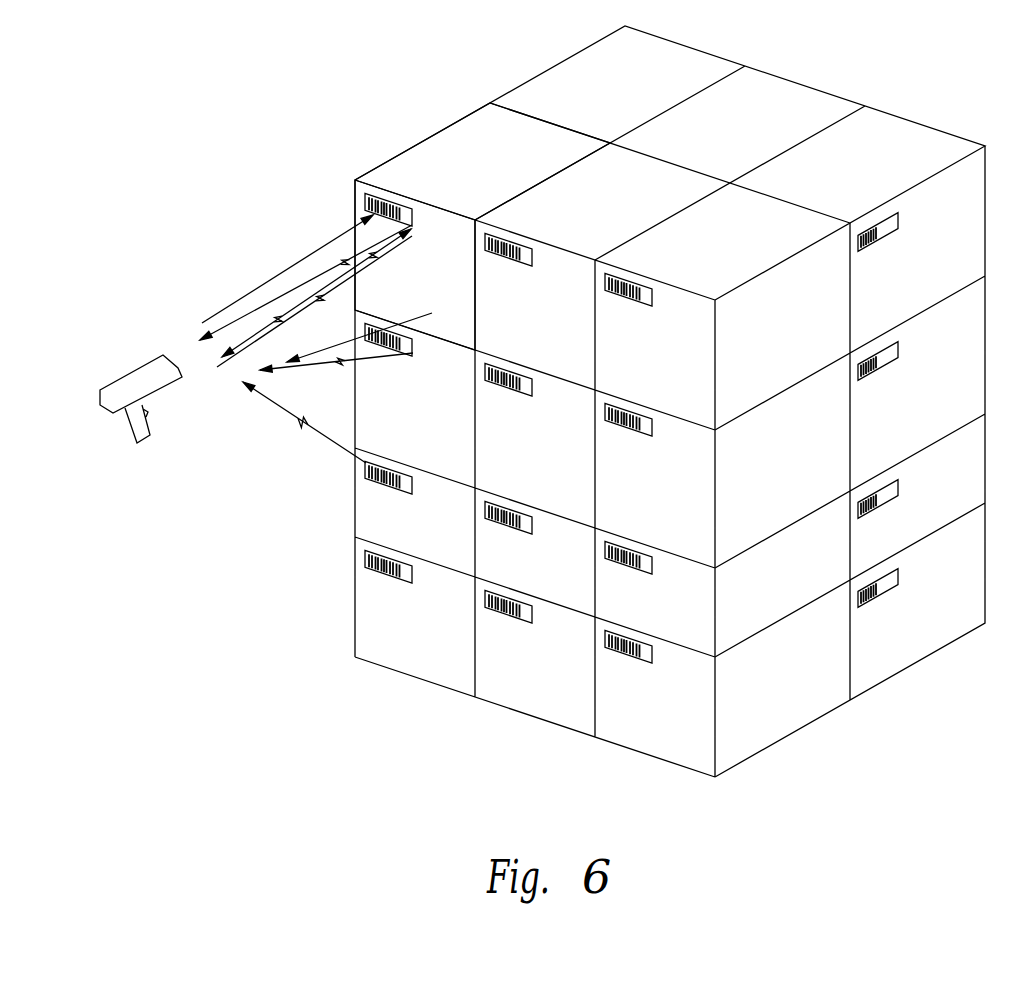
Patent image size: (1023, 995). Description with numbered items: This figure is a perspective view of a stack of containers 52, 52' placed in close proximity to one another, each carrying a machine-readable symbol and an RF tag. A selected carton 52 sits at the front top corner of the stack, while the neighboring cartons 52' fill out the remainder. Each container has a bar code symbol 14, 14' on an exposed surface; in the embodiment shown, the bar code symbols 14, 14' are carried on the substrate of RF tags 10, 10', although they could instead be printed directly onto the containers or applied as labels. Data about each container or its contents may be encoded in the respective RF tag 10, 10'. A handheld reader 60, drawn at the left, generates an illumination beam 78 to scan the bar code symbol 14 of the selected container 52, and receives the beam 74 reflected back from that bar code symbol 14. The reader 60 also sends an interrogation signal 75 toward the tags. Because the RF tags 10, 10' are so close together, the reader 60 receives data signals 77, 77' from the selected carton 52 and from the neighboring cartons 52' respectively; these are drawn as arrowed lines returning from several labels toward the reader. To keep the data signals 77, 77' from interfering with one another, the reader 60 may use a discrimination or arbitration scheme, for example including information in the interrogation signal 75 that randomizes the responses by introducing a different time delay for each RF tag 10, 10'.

The container 52 is at (482, 226).
The neighboring containers 52' is at (638, 401).
The bar code symbol 14 is at (413, 186).
The bar code symbols 14' is at (619, 426).
The RF tag 10 is at (415, 229).
The RF tags 10' is at (631, 438).
The reflected beam 74 is at (333, 252).
The data signal 77 is at (316, 287).
The illumination beam 78 is at (263, 287).
The interrogation signal 75 is at (265, 337).
The data signals 77' is at (327, 373).
The reader 60 is at (105, 413).